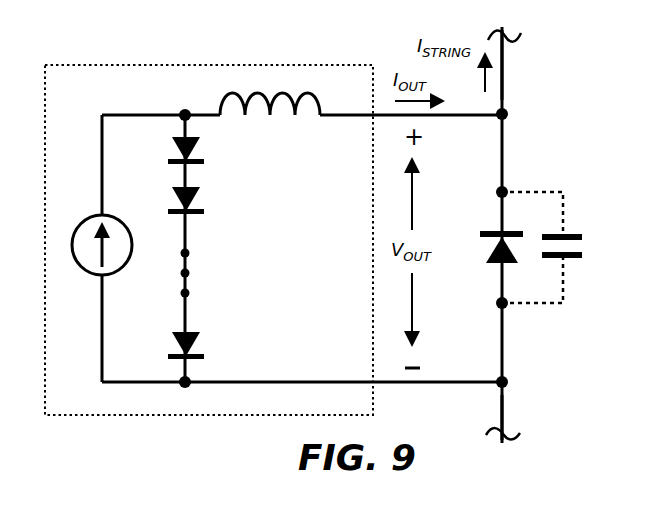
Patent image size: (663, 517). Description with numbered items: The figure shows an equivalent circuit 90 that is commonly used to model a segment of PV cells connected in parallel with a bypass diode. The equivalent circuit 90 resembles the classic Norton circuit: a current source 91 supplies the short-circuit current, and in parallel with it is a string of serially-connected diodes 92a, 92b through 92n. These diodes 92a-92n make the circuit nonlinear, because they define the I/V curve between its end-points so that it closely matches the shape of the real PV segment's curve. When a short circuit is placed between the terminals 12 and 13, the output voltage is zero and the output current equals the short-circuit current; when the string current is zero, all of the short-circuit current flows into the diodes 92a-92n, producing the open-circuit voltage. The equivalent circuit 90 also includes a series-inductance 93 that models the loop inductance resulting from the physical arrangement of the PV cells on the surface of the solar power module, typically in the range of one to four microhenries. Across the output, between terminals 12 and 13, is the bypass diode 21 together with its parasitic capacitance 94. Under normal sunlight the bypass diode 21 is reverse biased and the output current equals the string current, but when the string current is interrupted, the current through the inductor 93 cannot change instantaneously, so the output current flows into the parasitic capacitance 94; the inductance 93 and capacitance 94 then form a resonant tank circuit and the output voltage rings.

The equivalent circuit 90 is at (141, 65).
The current source (short-circuit current) 91 is at (122, 269).
The diode 92a is at (206, 162).
The diode 92b is at (206, 212).
The diode 92n is at (206, 357).
The series-inductance 93 is at (296, 115).
The output terminal 12 is at (504, 58).
The output terminal 13 is at (504, 410).
The bypass diode 21 is at (480, 232).
The parasitic capacitance 94 is at (582, 236).